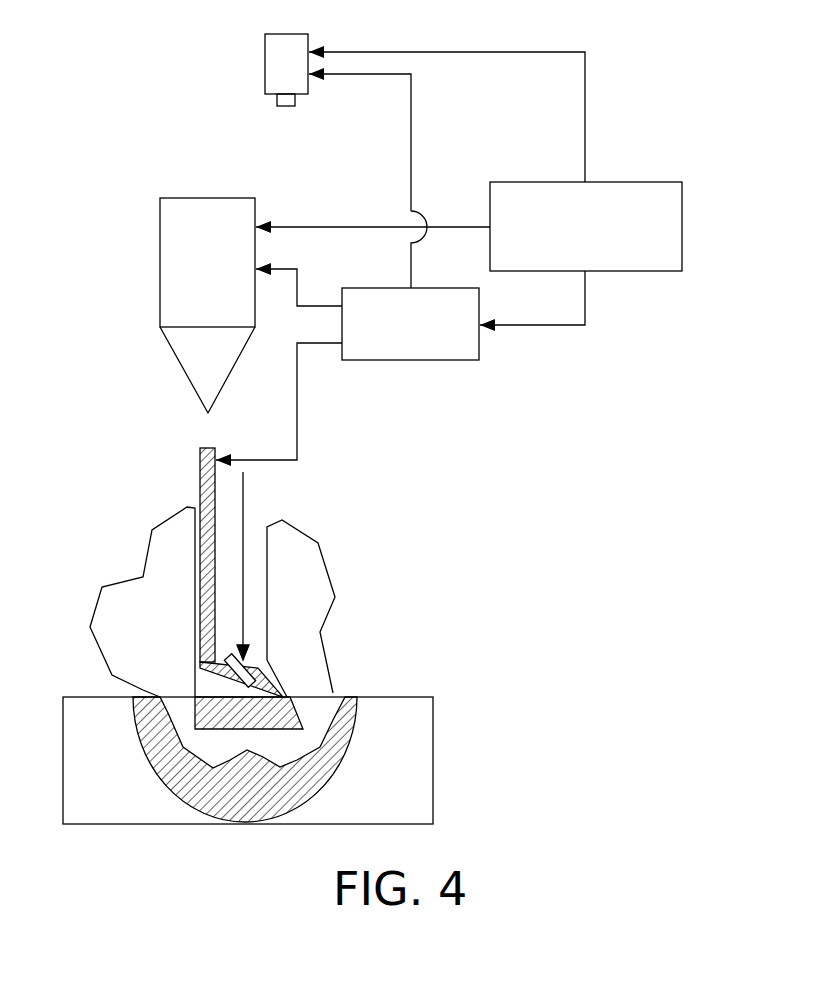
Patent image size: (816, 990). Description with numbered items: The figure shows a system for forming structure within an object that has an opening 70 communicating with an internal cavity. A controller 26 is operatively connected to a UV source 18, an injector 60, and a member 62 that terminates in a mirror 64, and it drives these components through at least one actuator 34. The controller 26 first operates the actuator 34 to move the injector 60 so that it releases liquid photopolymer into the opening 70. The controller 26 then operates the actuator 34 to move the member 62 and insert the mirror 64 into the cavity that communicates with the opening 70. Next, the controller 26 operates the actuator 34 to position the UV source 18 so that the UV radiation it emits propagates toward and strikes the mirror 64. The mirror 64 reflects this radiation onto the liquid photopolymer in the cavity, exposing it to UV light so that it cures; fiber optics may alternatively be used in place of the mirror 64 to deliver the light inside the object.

The UV source 18 is at (265, 63).
The controller 26 is at (650, 182).
The actuator 34 is at (410, 360).
The injector 60 is at (160, 262).
The member 62 is at (200, 478).
The mirror 64 is at (254, 668).
The opening 70 is at (255, 537).